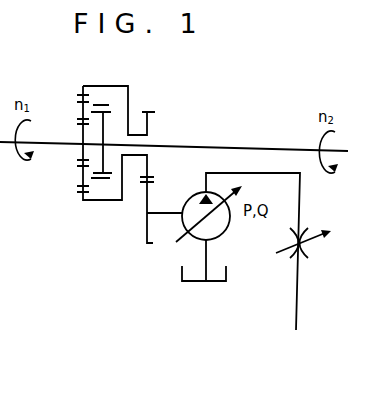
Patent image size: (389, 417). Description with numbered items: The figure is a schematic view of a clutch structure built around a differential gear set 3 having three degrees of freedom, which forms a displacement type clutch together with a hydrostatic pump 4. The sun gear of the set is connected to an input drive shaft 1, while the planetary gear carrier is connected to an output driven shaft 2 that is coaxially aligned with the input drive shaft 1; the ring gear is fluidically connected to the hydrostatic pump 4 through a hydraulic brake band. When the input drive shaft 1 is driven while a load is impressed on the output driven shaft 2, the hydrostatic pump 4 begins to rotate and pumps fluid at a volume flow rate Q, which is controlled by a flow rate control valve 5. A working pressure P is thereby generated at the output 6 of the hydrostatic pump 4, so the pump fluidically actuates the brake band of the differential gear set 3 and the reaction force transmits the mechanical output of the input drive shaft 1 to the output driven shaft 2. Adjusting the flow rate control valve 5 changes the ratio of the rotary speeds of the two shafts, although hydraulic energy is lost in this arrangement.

The input drive shaft 1 is at (58, 151).
The output driven shaft 2 is at (195, 144).
The differential gear set 3 is at (135, 109).
The hydrostatic pump 4 is at (178, 232).
The flow rate control valve 5 is at (305, 249).
The output of hydrostatic pump 6 is at (305, 205).